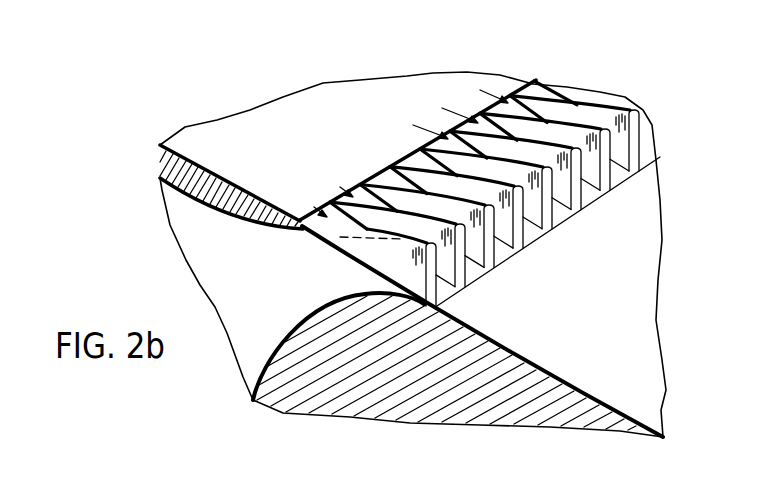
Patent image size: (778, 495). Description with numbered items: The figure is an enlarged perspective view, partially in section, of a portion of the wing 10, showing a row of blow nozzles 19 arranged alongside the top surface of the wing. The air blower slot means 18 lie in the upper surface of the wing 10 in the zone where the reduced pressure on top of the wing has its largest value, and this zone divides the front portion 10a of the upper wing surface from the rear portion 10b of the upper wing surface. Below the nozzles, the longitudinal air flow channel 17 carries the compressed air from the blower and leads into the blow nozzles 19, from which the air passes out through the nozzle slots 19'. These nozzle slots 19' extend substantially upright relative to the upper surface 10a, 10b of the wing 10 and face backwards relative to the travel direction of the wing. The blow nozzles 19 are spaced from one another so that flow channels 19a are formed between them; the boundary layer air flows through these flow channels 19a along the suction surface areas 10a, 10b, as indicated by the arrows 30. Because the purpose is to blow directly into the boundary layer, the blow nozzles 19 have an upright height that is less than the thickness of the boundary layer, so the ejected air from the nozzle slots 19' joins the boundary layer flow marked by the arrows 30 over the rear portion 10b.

The wing 10 is at (322, 78).
The front portion of the upper wing surface 10a is at (250, 123).
The rear portion of the upper wing surface 10b is at (659, 268).
The air flow channel 17 is at (262, 322).
The air blower slot means 18 is at (647, 135).
The blow nozzles 19 is at (497, 190).
The flow channels 19a is at (423, 162).
The nozzle slots 19' is at (512, 259).
The arrows 30 is at (342, 183).